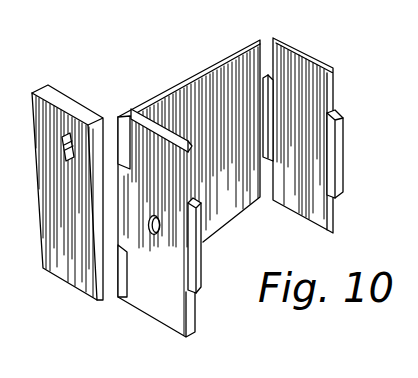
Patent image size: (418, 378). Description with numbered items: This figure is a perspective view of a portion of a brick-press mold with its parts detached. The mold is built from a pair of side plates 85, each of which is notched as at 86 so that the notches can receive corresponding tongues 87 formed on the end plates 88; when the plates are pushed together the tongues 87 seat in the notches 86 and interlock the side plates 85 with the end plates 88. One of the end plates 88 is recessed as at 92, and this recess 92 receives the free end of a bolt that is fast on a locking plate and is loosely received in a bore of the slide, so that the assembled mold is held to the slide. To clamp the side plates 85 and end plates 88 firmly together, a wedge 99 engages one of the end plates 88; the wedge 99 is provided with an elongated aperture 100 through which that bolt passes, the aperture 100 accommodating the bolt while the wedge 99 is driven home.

The side plate 85 is at (199, 84).
The notch 86 is at (257, 95).
The tongue 87 is at (201, 263).
The end plate 88 is at (303, 67).
The recess 92 is at (161, 228).
The wedge 99 is at (64, 92).
The elongated aperture 100 is at (68, 142).